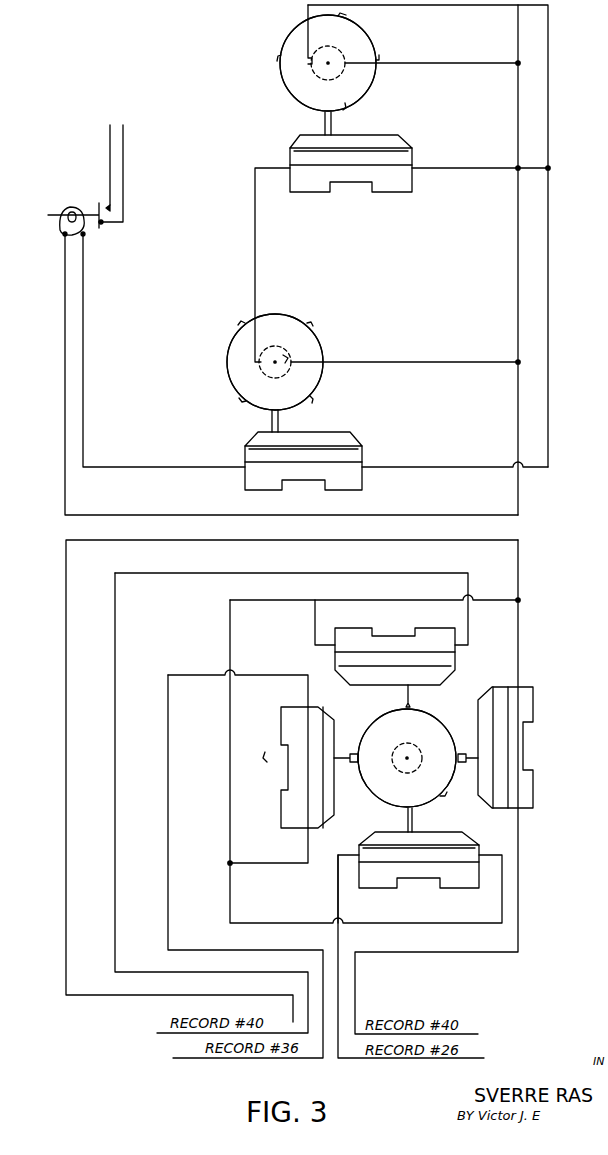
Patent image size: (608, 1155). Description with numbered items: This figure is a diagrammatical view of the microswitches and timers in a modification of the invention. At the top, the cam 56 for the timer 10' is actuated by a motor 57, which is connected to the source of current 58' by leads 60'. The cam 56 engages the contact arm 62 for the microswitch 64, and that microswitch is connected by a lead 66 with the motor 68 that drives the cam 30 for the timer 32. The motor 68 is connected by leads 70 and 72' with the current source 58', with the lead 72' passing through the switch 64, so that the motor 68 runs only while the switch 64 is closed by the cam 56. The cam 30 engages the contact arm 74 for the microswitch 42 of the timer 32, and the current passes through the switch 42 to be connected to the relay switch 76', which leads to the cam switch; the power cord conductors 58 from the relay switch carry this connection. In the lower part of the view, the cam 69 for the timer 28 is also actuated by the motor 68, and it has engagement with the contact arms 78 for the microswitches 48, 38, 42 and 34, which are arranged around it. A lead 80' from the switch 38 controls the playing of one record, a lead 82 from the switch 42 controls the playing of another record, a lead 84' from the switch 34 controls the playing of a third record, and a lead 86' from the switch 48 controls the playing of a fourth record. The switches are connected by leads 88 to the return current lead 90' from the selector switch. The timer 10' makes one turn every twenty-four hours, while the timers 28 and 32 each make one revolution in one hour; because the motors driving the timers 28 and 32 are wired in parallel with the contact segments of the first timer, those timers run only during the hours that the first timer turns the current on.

The timer 10' is at (314, 58).
The cam 56 is at (292, 88).
The motor 57 is at (318, 72).
The source of current 58' is at (452, 236).
The power cord conductors 58 is at (305, 373).
The leads 60' is at (432, 42).
The contact arm 62 is at (333, 125).
The microswitch 64 is at (388, 190).
The lead 66 is at (255, 246).
The lead 70 is at (408, 362).
The lead 72' is at (481, 155).
The relay switch 76' is at (72, 187).
The timer 32 is at (228, 328).
The cam 30 is at (242, 382).
The motor 68 is at (262, 358).
The contact arm 74 is at (280, 422).
The microswitch 42 is at (258, 470).
The lead 86' is at (291, 803).
The leads 88 is at (230, 628).
The return current lead 90' is at (275, 781).
The lead 84' is at (230, 864).
The lead 80' is at (436, 787).
The conductor 82 is at (342, 890).
The microswitch 48 is at (335, 655).
The microswitch 34 is at (313, 829).
The microswitch 38 is at (520, 810).
The timer 28 is at (371, 802).
The cam 69 is at (437, 797).
The contact arms 78 is at (416, 695).